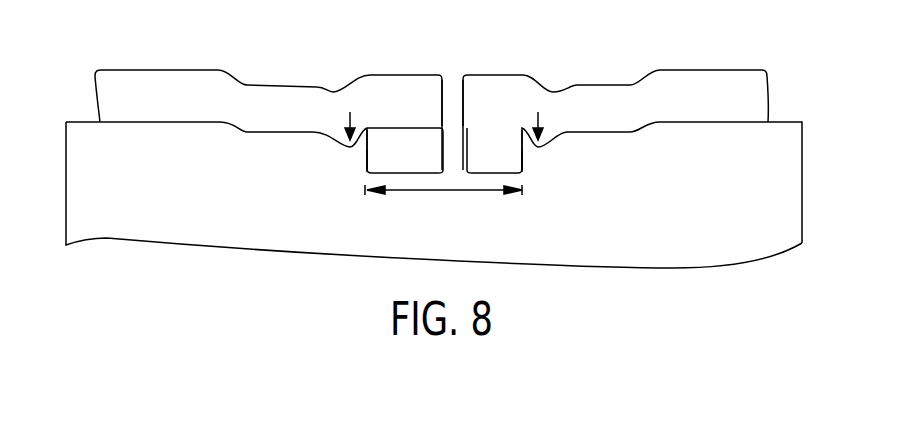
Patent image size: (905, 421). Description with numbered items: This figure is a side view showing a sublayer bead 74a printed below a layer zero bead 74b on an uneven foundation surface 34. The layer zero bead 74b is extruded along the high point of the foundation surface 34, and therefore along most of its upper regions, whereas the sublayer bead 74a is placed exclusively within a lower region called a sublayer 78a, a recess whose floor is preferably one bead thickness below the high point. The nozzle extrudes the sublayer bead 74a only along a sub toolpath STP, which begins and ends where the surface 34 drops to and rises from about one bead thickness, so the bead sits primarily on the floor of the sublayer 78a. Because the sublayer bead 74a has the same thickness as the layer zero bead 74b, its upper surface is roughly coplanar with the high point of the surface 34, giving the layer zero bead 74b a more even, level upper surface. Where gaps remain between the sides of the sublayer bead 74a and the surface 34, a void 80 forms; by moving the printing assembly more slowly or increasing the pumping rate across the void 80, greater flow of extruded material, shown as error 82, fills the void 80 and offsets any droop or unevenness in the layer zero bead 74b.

The foundation surface 34 is at (778, 140).
The layer zero bead 74b is at (197, 85).
The sublayer 78a is at (437, 170).
The sublayer bead 74a is at (373, 153).
The void 80 is at (363, 159).
The error 82 is at (360, 145).
The sub toolpath STP is at (443, 204).